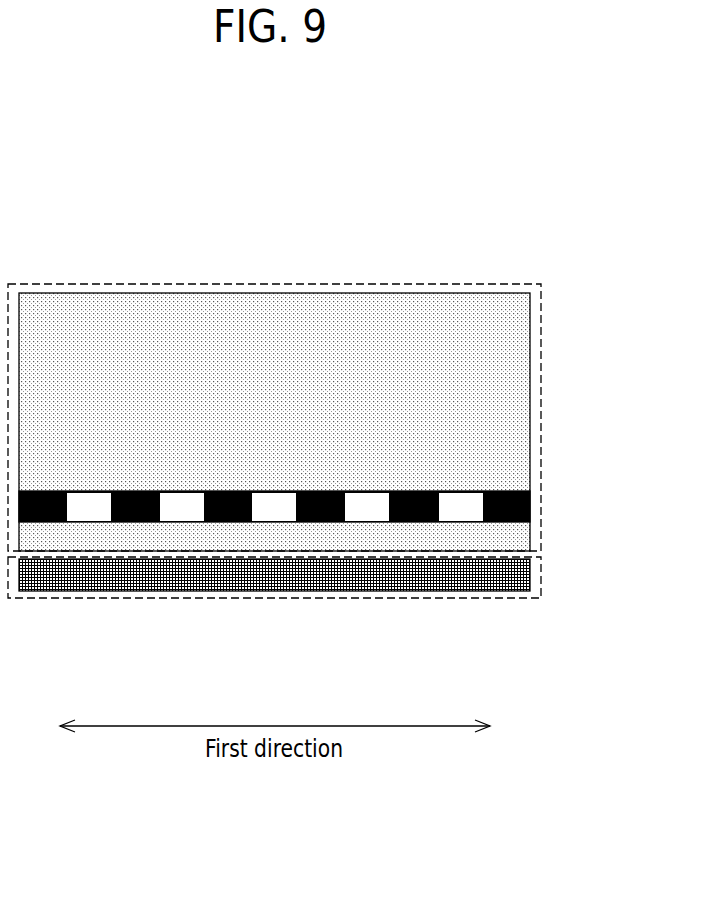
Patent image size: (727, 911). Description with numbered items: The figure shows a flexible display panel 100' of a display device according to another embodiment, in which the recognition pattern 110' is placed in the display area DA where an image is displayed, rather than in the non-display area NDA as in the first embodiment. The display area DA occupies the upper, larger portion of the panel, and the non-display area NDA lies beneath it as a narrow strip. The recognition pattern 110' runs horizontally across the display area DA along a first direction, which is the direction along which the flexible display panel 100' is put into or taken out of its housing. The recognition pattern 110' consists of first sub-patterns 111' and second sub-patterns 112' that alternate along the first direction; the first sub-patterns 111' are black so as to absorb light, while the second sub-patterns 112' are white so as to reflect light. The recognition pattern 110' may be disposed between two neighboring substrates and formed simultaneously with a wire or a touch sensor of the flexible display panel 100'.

The flexible display panel 100' is at (313, 441).
The recognition pattern 110' is at (274, 599).
The first sub-pattern 111' is at (274, 577).
The second sub-pattern 112' is at (277, 578).
The display area DA is at (541, 450).
The non-display area NDA is at (541, 575).